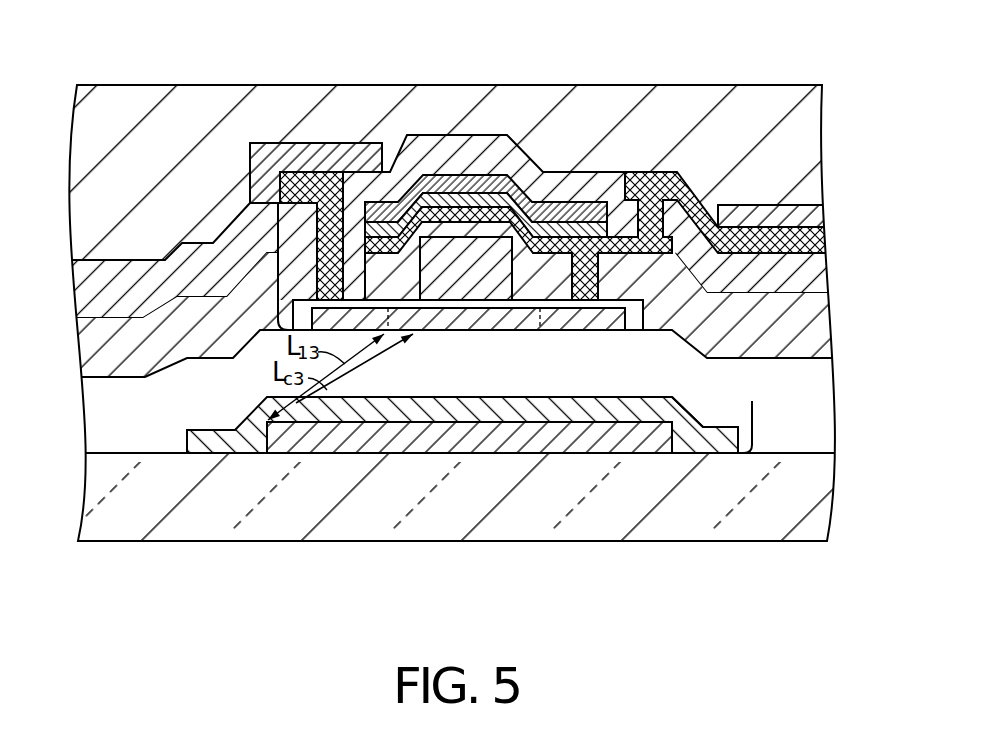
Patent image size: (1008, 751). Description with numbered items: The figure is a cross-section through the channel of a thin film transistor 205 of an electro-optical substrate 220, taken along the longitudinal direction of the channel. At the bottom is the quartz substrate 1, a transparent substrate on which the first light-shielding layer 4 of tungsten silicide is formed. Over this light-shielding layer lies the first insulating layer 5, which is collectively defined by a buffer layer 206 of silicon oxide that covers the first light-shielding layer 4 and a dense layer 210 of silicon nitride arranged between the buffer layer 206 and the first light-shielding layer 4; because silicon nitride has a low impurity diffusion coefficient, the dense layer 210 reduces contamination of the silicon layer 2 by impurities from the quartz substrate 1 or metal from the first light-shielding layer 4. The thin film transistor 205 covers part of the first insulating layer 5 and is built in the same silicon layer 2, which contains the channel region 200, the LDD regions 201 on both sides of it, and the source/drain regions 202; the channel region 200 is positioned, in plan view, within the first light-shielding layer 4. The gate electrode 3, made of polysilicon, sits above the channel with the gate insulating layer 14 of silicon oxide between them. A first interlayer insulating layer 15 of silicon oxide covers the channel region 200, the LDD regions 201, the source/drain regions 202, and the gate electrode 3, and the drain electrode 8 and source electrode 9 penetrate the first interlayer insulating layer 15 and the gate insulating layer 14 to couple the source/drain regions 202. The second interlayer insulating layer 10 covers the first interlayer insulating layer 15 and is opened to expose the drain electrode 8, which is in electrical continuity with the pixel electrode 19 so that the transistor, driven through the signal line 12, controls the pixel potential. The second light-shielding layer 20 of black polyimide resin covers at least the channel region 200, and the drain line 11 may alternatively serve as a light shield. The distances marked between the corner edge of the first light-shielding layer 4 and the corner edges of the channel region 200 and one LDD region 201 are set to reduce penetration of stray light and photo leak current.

The quartz substrate 1 is at (823, 492).
The silicon layer 2 is at (468, 463).
The gate electrode 3 is at (493, 253).
The first light-shielding layer 4 is at (633, 445).
The first insulating layer 5 is at (752, 401).
The drain electrode 8 is at (653, 172).
The source electrode 9 is at (306, 143).
The second interlayer insulating layer 10 is at (805, 277).
The drain line 11 is at (449, 195).
The signal line 12 is at (362, 143).
The gate insulating layer 14 is at (633, 313).
The first interlayer insulating layer 15 is at (815, 343).
The pixel electrode 19 is at (807, 213).
The second light-shielding layer 20 is at (797, 168).
The channel region 200 is at (465, 315).
The LDD regions 201 is at (398, 315).
The source/drain regions 202 is at (343, 315).
The thin film transistor 205 is at (273, 237).
The buffer layer 206 is at (702, 400).
The dense layer 210 is at (725, 443).
The electro-optical substrate 220 is at (797, 21).